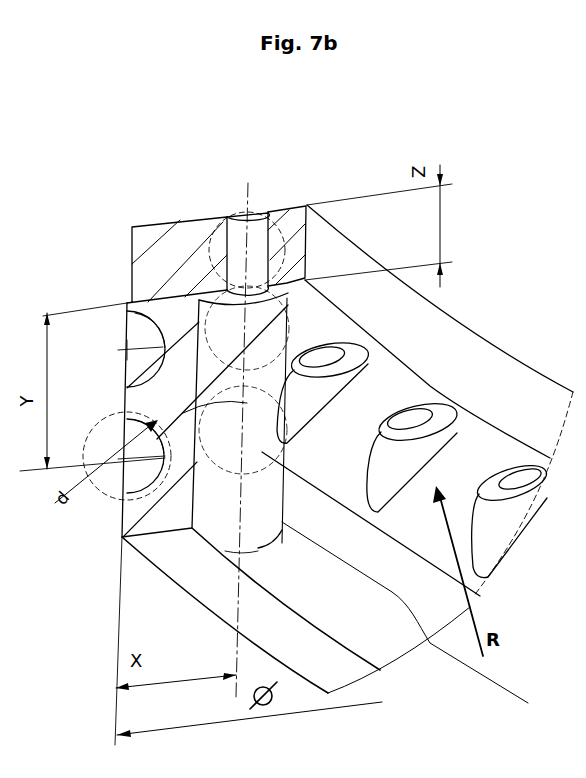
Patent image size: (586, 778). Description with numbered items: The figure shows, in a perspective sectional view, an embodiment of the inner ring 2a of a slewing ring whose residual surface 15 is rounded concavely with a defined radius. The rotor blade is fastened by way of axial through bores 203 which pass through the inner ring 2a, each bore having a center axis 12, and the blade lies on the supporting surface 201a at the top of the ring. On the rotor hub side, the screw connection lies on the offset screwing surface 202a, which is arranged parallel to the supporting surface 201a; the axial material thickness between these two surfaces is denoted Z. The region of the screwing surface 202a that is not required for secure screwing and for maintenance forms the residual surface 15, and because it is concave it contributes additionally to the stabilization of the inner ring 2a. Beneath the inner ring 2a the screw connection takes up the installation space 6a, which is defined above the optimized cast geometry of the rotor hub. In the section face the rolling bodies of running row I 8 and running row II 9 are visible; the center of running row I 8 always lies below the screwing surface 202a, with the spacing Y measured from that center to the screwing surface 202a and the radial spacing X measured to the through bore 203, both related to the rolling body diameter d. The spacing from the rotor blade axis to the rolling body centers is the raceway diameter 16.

The supporting surface 201a is at (178, 216).
The axial through bore 203 is at (200, 216).
The center axis 12 is at (257, 183).
The screwing surface 202a is at (440, 403).
The residual surface 15 is at (450, 400).
The inner ring 2a is at (533, 392).
The running row II 9 is at (122, 350).
The running row I 8 is at (135, 432).
The raceway diameter 16 is at (296, 615).
The installation space 6a is at (411, 612).